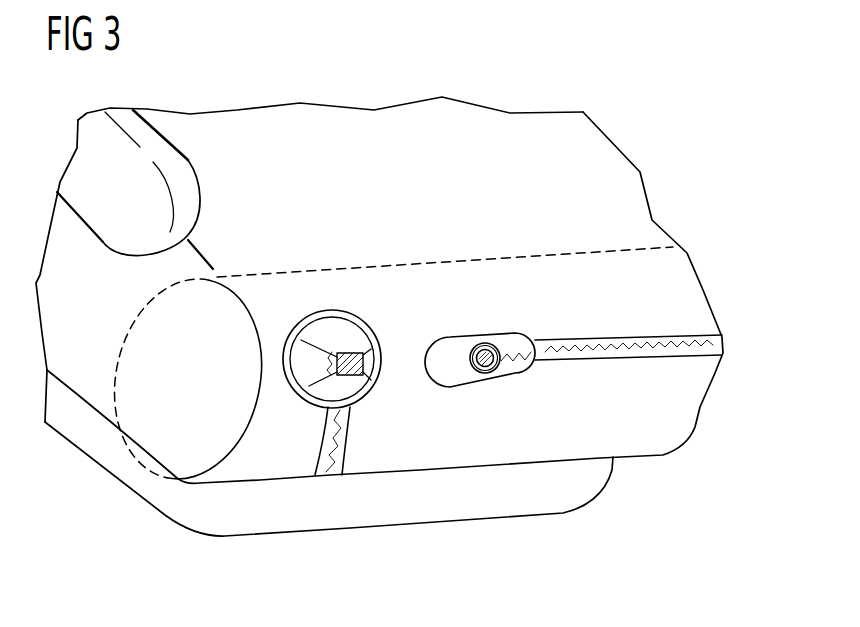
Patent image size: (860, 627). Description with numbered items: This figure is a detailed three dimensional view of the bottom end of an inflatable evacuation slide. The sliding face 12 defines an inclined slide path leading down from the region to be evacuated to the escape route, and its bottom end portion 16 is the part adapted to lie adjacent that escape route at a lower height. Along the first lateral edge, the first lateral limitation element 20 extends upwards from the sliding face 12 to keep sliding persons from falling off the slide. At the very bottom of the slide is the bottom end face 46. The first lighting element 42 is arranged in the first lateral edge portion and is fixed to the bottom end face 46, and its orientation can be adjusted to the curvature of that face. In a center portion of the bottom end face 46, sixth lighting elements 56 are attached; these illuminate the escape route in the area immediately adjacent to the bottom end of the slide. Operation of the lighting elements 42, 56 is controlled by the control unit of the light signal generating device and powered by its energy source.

The sliding face 12 is at (493, 92).
The bottom end portion 16 is at (688, 155).
The first lateral limitation element 20 is at (237, 143).
The first lighting element 42 is at (377, 415).
The bottom end face 46 is at (688, 453).
The sixth lighting elements 56 is at (527, 320).